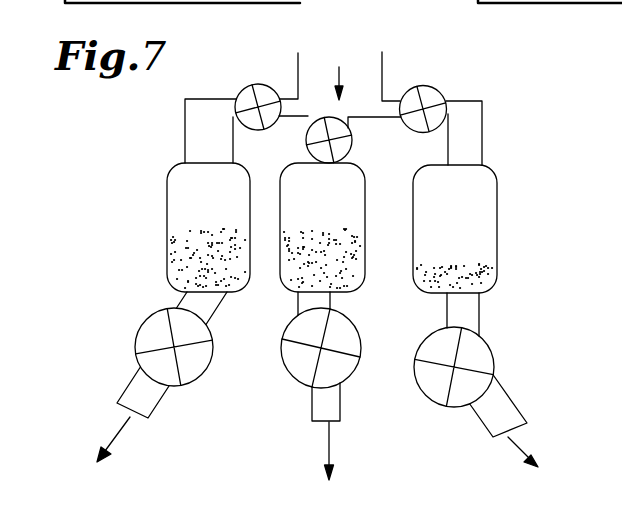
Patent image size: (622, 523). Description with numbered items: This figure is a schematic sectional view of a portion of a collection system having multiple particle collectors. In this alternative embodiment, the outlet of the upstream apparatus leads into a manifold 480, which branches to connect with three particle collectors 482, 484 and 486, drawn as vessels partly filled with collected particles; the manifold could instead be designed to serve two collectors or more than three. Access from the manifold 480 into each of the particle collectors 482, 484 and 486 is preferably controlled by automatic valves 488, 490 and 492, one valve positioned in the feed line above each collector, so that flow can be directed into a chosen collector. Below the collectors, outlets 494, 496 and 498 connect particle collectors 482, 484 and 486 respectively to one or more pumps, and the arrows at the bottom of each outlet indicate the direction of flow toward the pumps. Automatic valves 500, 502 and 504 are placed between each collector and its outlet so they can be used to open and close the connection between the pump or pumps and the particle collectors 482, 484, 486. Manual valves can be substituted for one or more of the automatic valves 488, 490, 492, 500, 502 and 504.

The manifold 480 is at (368, 74).
The particle collector 482 is at (492, 203).
The particle collector 484 is at (362, 200).
The particle collector 486 is at (177, 198).
The automatic valve 488 is at (440, 90).
The automatic valve 490 is at (307, 136).
The automatic valve 492 is at (248, 85).
The outlet 494 is at (483, 408).
The outlet 496 is at (333, 410).
The outlet 498 is at (157, 402).
The automatic valve 500 is at (482, 350).
The automatic valve 502 is at (340, 373).
The automatic valve 504 is at (150, 327).